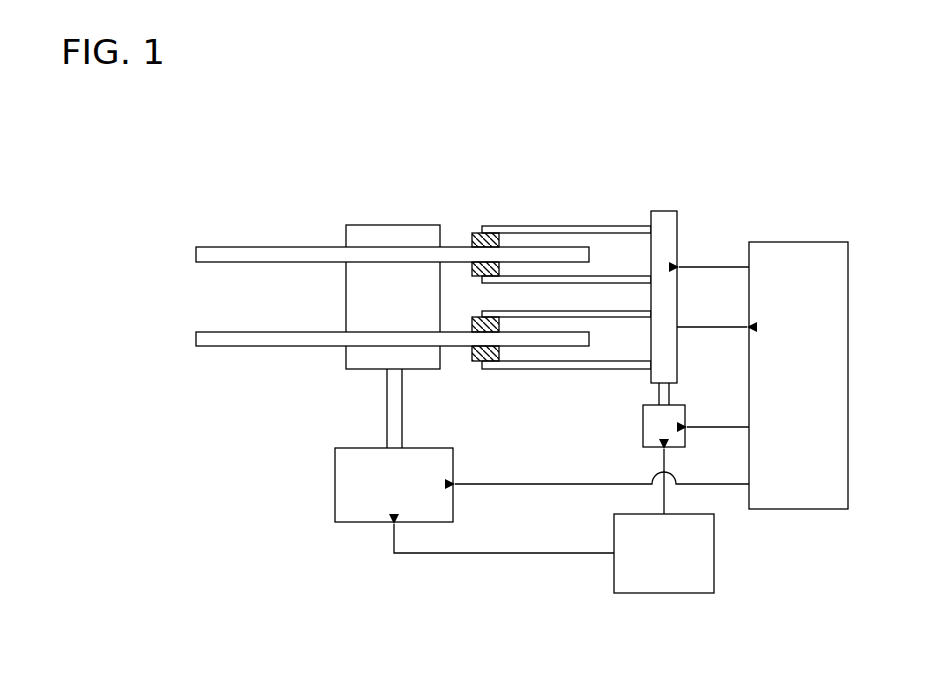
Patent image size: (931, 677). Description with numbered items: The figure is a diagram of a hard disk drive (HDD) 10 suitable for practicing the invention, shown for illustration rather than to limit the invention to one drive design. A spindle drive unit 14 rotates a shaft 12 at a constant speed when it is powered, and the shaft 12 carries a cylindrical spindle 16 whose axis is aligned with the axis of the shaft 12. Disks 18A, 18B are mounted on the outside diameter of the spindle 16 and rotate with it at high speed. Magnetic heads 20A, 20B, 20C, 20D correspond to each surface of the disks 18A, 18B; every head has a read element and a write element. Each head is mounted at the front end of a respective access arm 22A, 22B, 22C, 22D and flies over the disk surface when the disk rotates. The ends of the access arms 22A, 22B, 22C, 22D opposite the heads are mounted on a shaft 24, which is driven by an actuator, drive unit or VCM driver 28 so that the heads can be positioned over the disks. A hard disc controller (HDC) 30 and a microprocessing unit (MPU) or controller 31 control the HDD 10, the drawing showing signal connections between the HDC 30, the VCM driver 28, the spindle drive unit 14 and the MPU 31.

The hard disk drive 10 is at (316, 218).
The shaft 12 is at (386, 396).
The spindle drive unit 14 is at (380, 497).
The cylindrical spindle 16 is at (388, 225).
The disk 18A is at (248, 247).
The disk 18B is at (258, 347).
The magnetic head 20A is at (473, 233).
The magnetic head 20B is at (472, 275).
The magnetic head 20C is at (472, 318).
The magnetic head 20D is at (472, 361).
The access arm 22A is at (555, 224).
The access arm 22B is at (555, 283).
The access arm 22C is at (563, 311).
The access arm 22D is at (567, 369).
The shaft 24 is at (677, 223).
The VCM driver 28 is at (642, 432).
The hard disc controller 30 is at (787, 412).
The microprocessing unit 31 is at (652, 581).